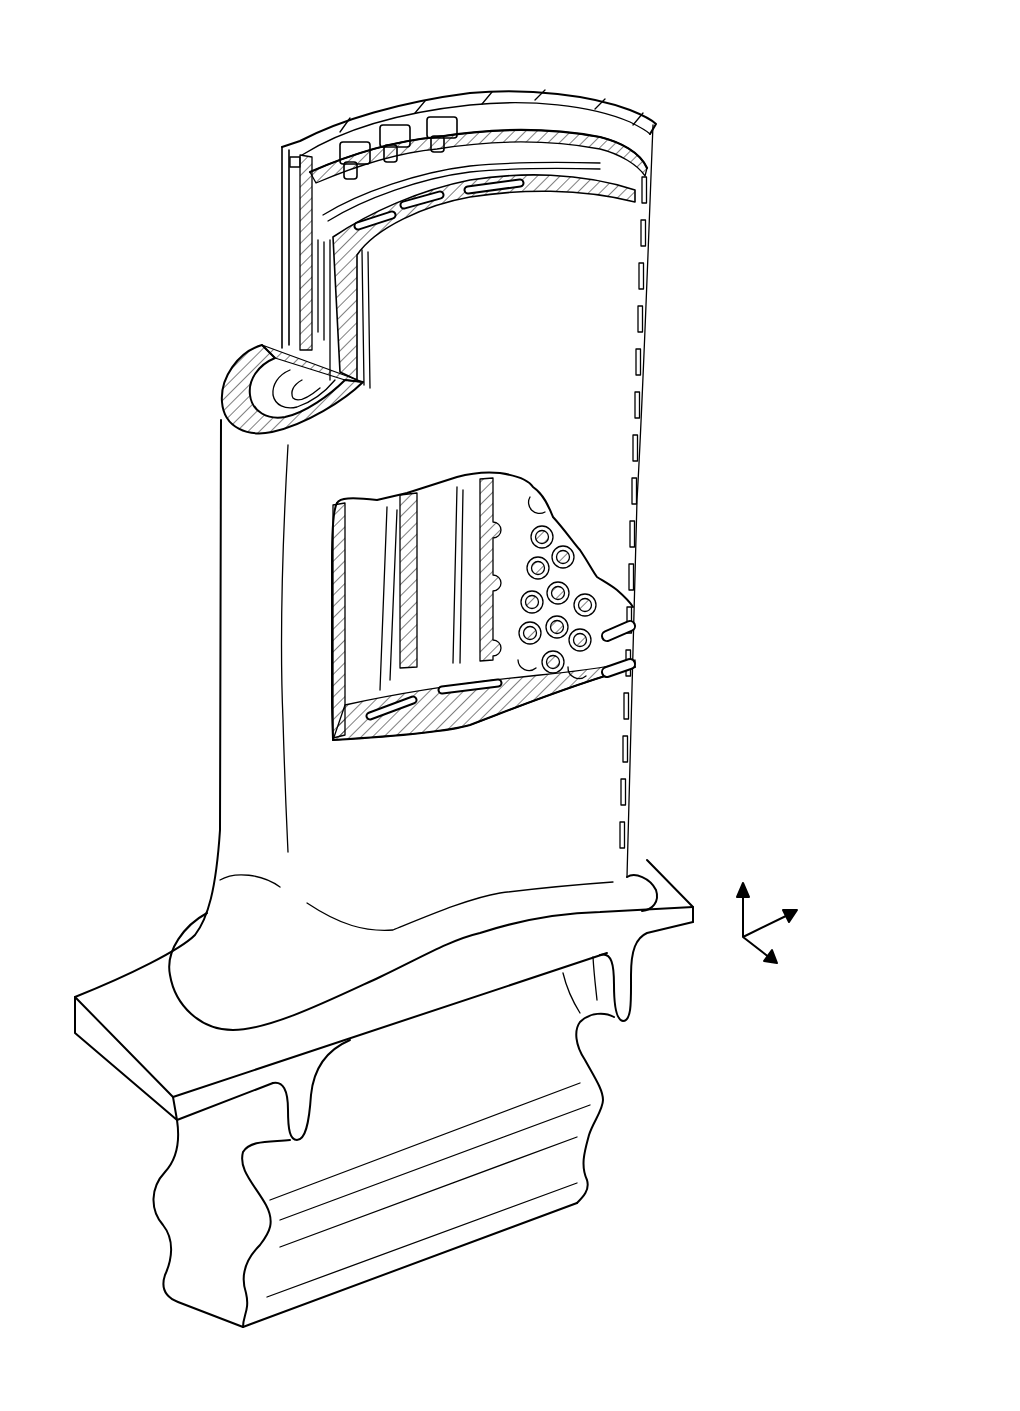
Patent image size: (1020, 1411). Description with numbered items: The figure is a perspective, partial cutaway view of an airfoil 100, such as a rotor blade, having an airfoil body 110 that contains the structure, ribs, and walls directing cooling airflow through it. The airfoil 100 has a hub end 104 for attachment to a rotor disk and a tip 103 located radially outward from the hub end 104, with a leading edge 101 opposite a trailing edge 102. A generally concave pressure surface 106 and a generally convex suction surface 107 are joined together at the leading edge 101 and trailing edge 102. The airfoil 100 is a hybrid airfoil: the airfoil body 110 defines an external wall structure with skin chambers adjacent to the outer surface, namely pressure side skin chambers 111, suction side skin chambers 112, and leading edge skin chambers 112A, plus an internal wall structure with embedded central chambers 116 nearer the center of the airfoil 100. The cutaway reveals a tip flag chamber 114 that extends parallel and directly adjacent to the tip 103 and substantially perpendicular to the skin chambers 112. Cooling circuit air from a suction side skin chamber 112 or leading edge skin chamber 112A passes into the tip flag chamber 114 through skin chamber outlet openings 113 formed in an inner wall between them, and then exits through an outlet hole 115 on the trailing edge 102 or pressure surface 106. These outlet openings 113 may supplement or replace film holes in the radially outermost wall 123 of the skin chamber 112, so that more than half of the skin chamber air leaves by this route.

The airfoil 100 is at (122, 88).
The leading edge 101 is at (240, 485).
The trailing edge 102 is at (650, 278).
The tip 103 is at (366, 53).
The hub end 104 is at (453, 1030).
The pressure surface 106 is at (517, 400).
The suction surface 107 is at (265, 350).
The airfoil body 110 is at (543, 195).
The pressure side skin chamber 111 is at (490, 195).
The suction side skin chamber 112 is at (345, 148).
The leading edge skin chamber 112A is at (258, 402).
The skin chamber outlet opening 113 is at (352, 142).
The tip flag chamber 114 is at (323, 223).
The outlet hole 115 is at (612, 188).
The central chamber 116 is at (293, 377).
The radially outermost wall 123 is at (290, 165).